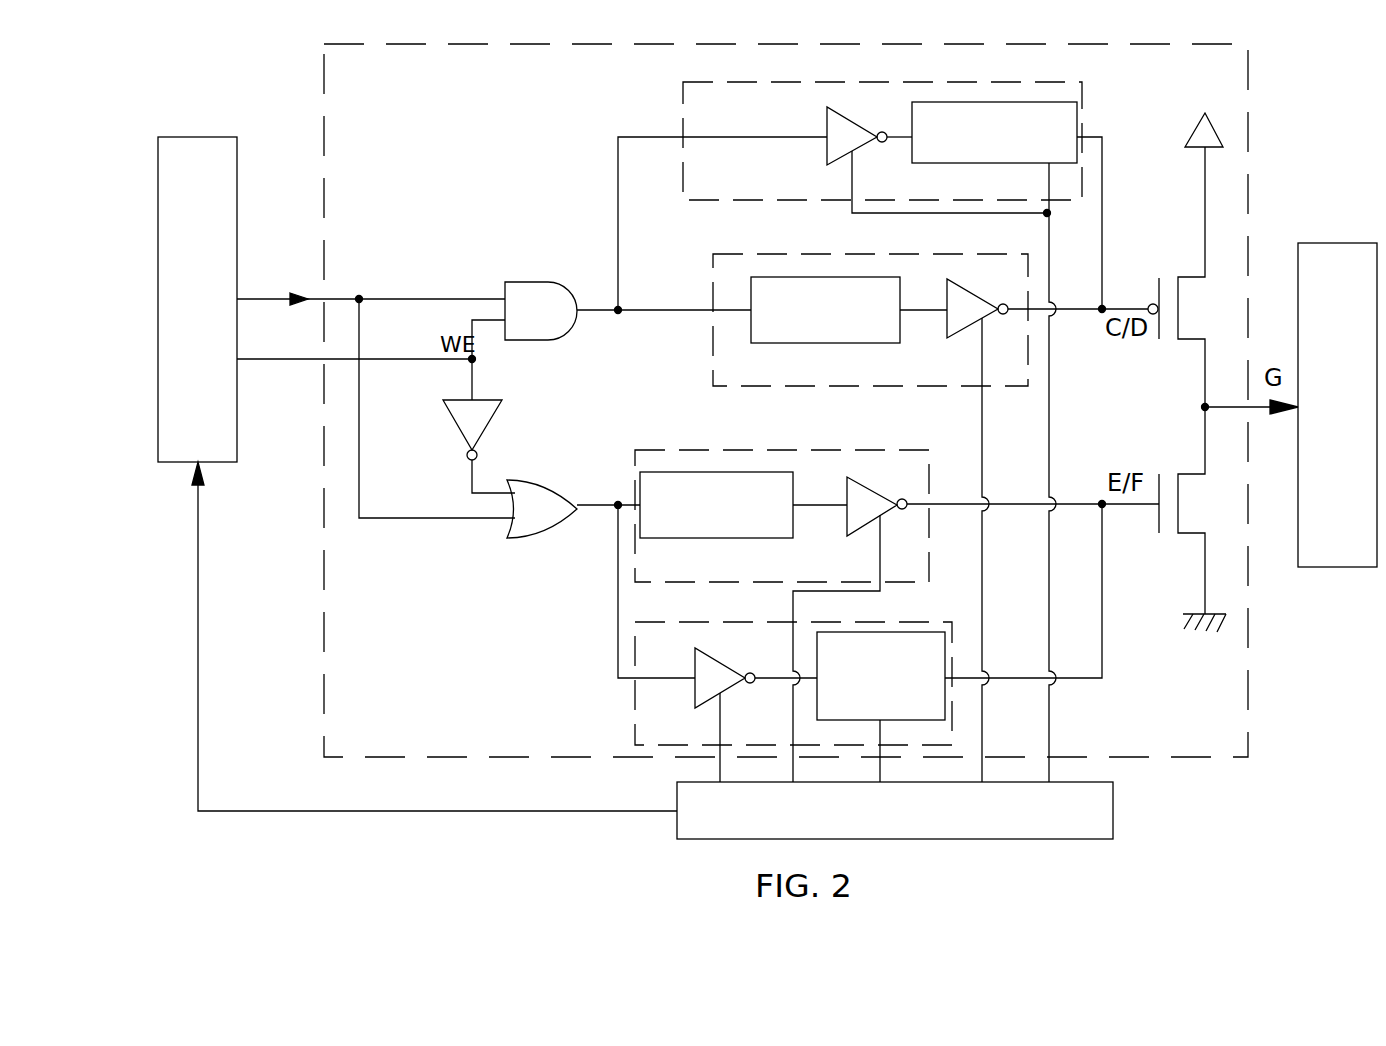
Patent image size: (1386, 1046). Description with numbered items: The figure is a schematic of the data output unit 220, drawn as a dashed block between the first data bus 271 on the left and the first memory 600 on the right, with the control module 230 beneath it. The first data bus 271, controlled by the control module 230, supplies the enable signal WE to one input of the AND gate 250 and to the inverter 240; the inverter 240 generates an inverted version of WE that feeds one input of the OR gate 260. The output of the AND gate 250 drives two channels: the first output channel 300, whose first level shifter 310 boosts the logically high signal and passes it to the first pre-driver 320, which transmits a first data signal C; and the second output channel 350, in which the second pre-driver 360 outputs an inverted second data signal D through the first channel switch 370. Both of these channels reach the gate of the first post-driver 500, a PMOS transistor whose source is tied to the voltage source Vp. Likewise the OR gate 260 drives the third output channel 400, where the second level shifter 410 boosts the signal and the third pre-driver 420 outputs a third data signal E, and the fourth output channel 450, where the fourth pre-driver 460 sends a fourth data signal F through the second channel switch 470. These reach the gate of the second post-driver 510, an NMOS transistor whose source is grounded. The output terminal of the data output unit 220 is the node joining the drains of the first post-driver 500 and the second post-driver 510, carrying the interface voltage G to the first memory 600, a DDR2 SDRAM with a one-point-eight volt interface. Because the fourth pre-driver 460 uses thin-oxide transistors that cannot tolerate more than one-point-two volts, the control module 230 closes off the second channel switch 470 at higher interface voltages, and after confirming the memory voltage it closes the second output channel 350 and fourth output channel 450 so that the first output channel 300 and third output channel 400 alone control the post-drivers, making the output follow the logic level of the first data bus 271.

The data output unit 220 is at (340, 757).
The control module 230 is at (652, 650).
The inverter 240 is at (456, 438).
The AND gate 250 is at (548, 283).
The OR gate 260 is at (548, 480).
The first data bus 271 is at (197, 299).
The first output channel 300 is at (980, 254).
The first level shifter 310 is at (849, 310).
The first pre-driver 320 is at (961, 282).
The second output channel 350 is at (1030, 82).
The second pre-driver 360 is at (845, 118).
The first channel switch 370 is at (1007, 205).
The third output channel 400 is at (878, 450).
The second level shifter 410 is at (743, 505).
The third pre-driver 420 is at (861, 478).
The fourth output channel 450 is at (905, 622).
The fourth pre-driver 460 is at (722, 654).
The second channel switch 470 is at (959, 643).
The first post-driver 500 is at (1195, 245).
The second post-driver 510 is at (1200, 519).
The first memory 600 is at (1337, 405).